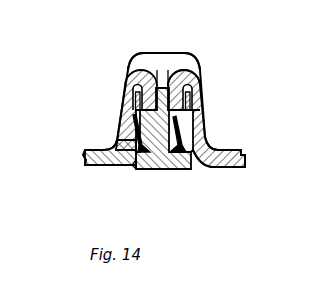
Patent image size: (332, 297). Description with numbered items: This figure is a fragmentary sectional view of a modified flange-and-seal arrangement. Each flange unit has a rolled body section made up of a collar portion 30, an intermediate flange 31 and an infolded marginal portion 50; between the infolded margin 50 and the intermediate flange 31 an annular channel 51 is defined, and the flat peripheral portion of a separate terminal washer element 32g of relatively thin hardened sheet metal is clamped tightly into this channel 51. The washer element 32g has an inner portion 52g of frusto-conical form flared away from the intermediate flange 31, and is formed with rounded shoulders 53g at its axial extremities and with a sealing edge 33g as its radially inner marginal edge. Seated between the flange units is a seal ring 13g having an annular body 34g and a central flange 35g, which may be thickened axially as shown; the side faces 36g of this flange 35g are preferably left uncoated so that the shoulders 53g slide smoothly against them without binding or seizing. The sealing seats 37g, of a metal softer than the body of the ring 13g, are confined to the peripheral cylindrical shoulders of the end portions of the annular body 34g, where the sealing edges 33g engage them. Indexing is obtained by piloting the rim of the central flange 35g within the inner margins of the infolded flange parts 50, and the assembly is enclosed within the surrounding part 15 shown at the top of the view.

The cap 15 is at (184, 56).
The infolded marginal portion 50 is at (164, 70).
The annular channel 51 is at (188, 83).
The intermediate flange 31 is at (133, 108).
The terminal washer element 32g is at (192, 101).
The central flange of seal ring 35g is at (137, 118).
The side faces of flange 36g is at (134, 133).
The inner portion of washer 52g is at (196, 130).
The rounded shoulder 53g is at (200, 135).
The collar portion 30 is at (246, 156).
The sealing seat 37g is at (132, 165).
The sealing edge 33g is at (167, 170).
The annular body of seal ring 34g is at (199, 165).
The seal ring 13g is at (153, 169).